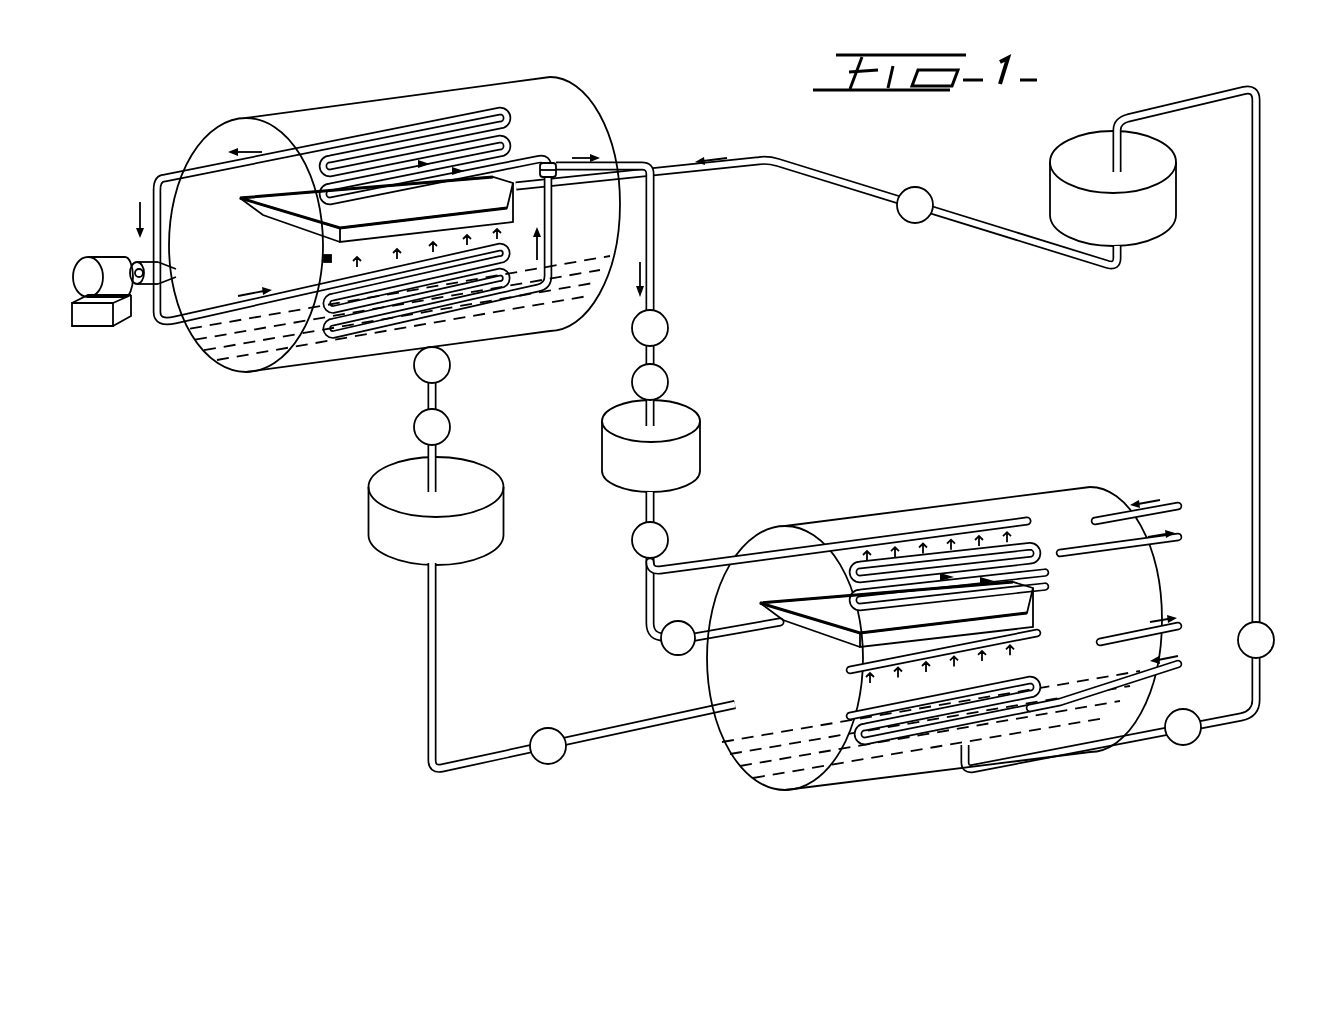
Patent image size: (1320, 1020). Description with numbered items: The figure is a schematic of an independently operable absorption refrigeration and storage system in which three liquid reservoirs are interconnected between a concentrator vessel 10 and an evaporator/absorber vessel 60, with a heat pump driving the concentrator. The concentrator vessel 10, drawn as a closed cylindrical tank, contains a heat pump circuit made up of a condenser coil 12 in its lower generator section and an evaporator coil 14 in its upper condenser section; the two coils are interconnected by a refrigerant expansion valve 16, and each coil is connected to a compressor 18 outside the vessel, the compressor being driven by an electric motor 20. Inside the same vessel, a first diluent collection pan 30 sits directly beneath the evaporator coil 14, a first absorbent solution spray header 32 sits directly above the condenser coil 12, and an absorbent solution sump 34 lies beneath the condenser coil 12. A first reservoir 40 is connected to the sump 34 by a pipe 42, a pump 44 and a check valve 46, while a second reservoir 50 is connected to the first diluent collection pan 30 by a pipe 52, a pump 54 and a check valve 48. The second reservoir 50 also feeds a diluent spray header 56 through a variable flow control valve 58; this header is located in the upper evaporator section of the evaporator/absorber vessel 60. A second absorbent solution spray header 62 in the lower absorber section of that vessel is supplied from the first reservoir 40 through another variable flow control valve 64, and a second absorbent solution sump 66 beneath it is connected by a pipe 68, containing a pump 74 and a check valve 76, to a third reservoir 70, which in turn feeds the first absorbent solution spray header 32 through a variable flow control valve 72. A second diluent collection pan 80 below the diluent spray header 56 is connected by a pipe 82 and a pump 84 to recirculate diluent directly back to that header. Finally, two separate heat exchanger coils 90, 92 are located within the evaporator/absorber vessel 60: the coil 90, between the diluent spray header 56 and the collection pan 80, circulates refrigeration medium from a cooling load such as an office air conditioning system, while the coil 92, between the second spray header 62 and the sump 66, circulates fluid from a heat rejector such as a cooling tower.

The concentrator vessel 10 is at (394, 225).
The condenser coil 12 is at (317, 356).
The evaporator coil 14 is at (455, 120).
The refrigerant expansion valve 16 is at (556, 166).
The compressor 18 is at (160, 292).
The electric motor 20 is at (113, 253).
The first diluent collection pan 30 is at (268, 214).
The first absorbent solution spray header 32 is at (325, 259).
The absorbent solution sump 34 is at (253, 362).
The first reservoir 40 is at (492, 527).
The pipe 42 is at (427, 398).
The pump 44 is at (448, 372).
The check valve 46 is at (442, 437).
The check valve 48 is at (667, 386).
The second reservoir 50 is at (692, 461).
The pipe 52 is at (656, 270).
The pump 54 is at (666, 330).
The diluent spray header 56 is at (997, 518).
The variable flow control valve 58 is at (667, 541).
The evaporator/absorber vessel 60 is at (1046, 484).
The second absorbent solution spray header 62 is at (1040, 636).
The variable flow control valve 64 is at (556, 729).
The second absorbent solution sump 66 is at (767, 759).
The pipe 68 is at (1078, 749).
The third reservoir 70 is at (1168, 197).
The variable flow control valve 72 is at (933, 199).
The pump 74 is at (1176, 708).
The check valve 76 is at (1246, 628).
The second diluent collection pan 80 is at (850, 640).
The pipe 82 is at (756, 627).
The pump 84 is at (672, 653).
The heat exchanger coil 90 is at (1038, 552).
The heat exchanger coil 92 is at (1057, 682).